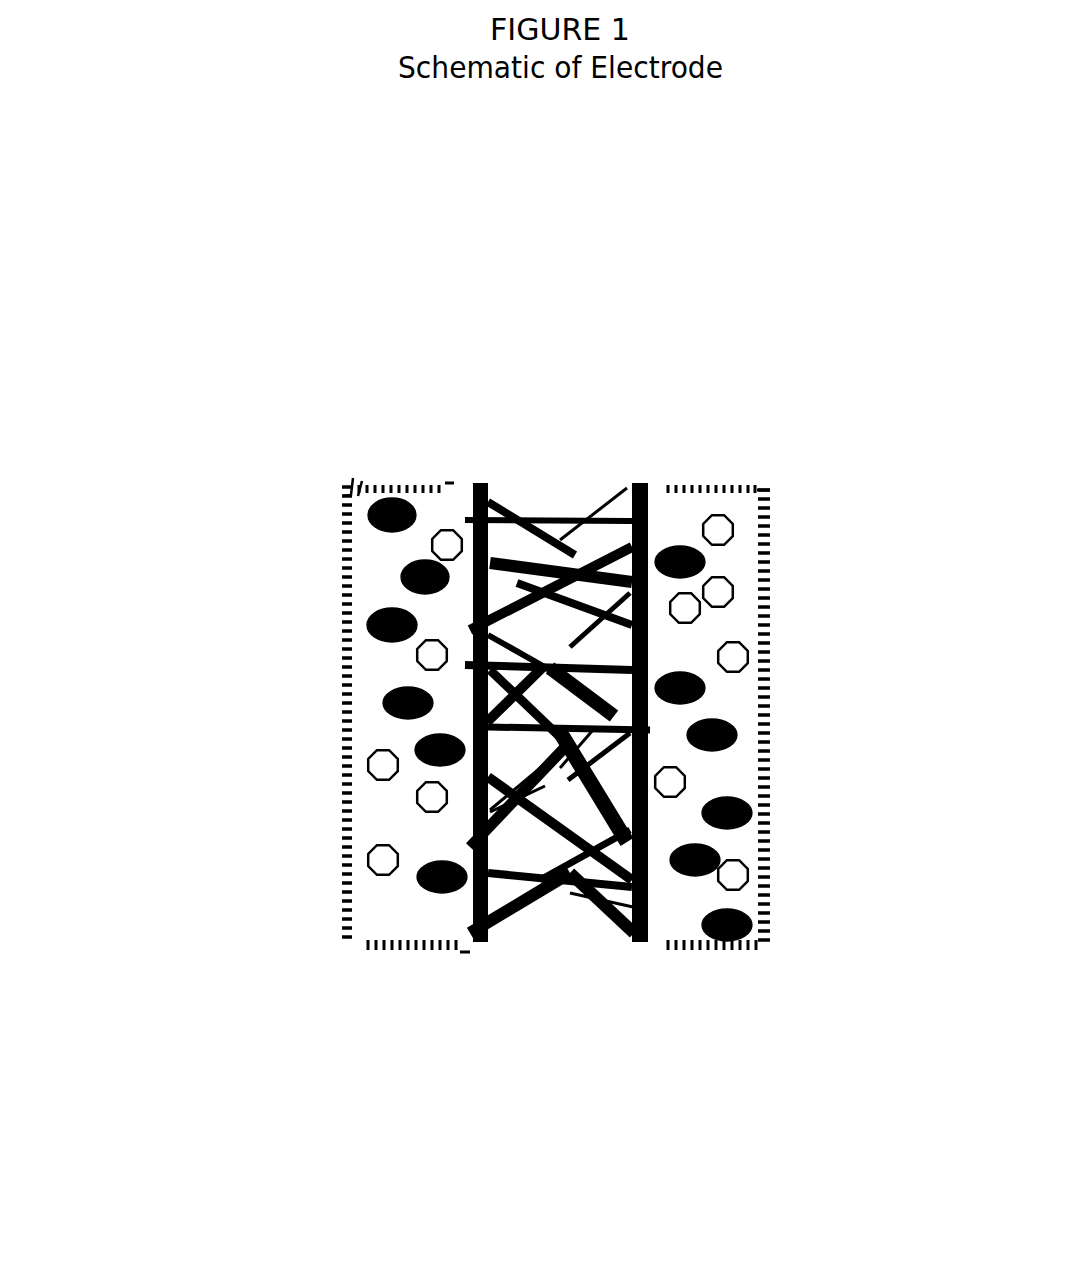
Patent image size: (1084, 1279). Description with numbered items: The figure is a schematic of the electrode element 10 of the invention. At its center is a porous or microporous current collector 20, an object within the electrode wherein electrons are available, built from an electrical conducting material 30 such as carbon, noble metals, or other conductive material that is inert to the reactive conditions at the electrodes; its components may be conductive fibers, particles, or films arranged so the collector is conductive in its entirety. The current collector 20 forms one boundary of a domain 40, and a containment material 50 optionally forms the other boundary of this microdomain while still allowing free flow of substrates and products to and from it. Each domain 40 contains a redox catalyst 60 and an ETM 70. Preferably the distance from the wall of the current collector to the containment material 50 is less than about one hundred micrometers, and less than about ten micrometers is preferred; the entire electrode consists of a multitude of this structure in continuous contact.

The electrode element 10 is at (770, 1095).
The porous current collector 20 is at (657, 452).
The electrical conducting material 30 is at (590, 950).
The domain 40 is at (513, 1000).
The containment material 50 is at (322, 609).
The redox catalyst 60 is at (368, 703).
The ETM 70 is at (700, 782).